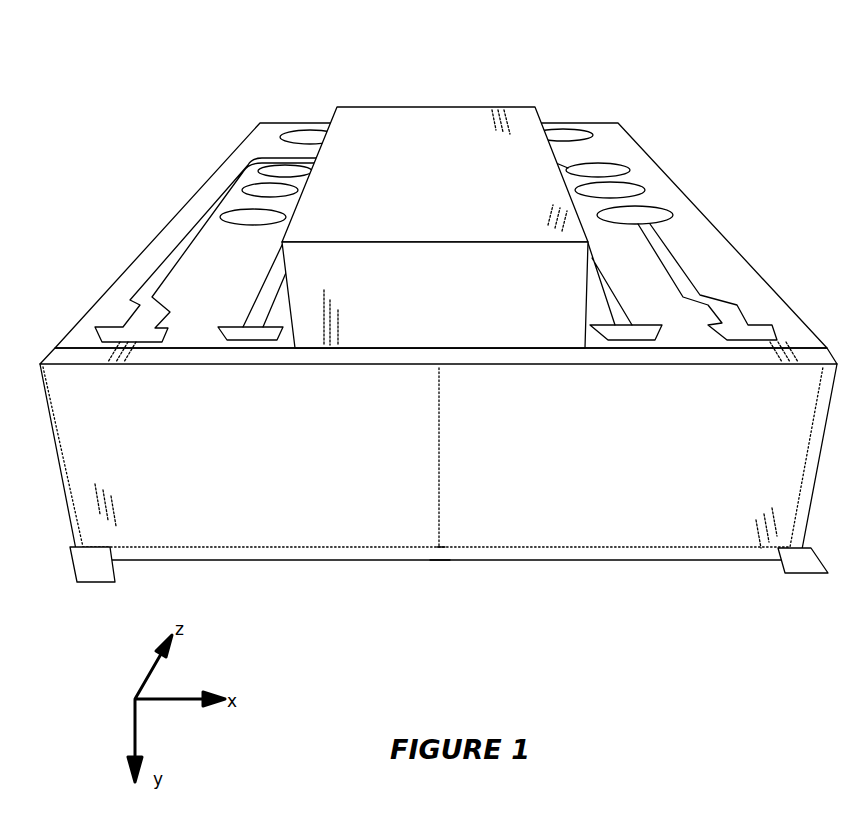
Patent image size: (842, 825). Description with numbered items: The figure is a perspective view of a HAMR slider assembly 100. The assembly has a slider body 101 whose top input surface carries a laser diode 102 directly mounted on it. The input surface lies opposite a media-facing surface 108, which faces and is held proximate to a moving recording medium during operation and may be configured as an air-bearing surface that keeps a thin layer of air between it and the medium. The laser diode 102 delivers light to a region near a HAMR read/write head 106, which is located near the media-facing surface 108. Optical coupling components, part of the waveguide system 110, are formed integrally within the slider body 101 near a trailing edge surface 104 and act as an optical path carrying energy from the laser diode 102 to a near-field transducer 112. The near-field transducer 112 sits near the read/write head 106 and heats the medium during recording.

The HAMR slider assembly 100 is at (632, 66).
The slider body 101 is at (148, 252).
The laser diode 102 is at (360, 108).
The trailing edge surface 104 is at (100, 583).
The HAMR read/write head 106 is at (446, 548).
The media-facing surface 108 is at (813, 575).
The waveguide system 110 is at (440, 437).
The near-field transducer 112 is at (437, 550).